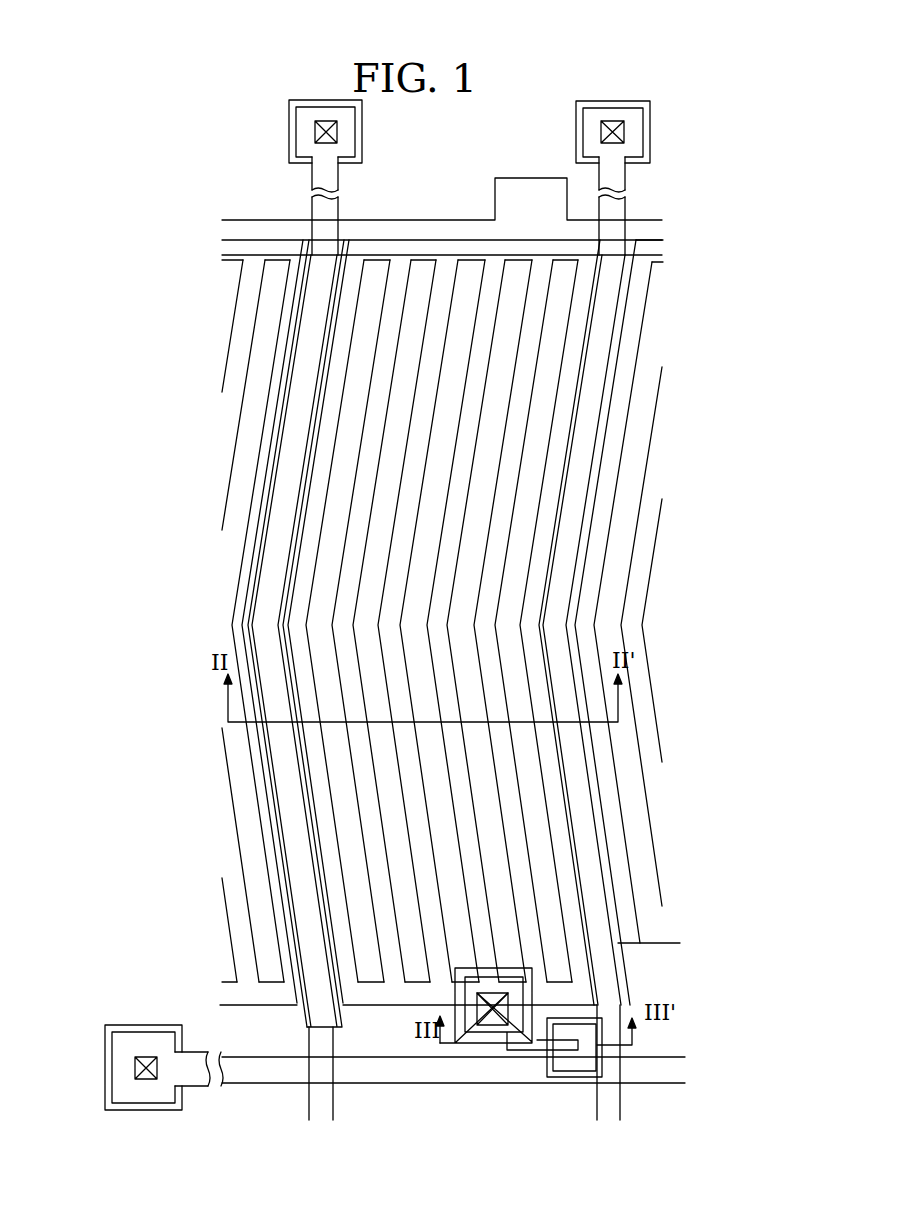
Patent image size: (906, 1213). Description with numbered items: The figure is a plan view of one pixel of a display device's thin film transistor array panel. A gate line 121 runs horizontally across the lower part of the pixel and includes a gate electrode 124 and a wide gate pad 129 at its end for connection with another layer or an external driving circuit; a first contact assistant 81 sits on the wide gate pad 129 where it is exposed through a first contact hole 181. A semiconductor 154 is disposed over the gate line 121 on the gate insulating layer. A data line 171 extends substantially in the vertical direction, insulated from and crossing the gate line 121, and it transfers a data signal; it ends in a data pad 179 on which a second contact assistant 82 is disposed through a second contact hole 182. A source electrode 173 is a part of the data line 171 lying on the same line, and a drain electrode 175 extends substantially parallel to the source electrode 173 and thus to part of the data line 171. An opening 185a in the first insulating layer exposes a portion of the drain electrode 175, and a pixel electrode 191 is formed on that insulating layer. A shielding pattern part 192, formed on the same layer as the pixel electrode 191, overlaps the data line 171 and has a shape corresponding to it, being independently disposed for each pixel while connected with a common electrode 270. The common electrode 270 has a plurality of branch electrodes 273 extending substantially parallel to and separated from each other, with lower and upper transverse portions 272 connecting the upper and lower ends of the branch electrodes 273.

The second contact assistant 82 is at (362, 110).
The second contact hole 182 is at (337, 131).
The data pad 179 is at (296, 132).
The transverse portions 272 is at (413, 250).
The branch electrodes 273 is at (540, 352).
The common electrode 270 is at (464, 649).
The data line 171 is at (627, 244).
The first contact assistant 81 is at (140, 1025).
The wide gate pad 129 is at (112, 1064).
The first contact hole 181 is at (150, 1082).
The gate line 121 is at (283, 1060).
The shielding pattern part 192 is at (334, 1088).
The pixel electrode 191 is at (462, 1044).
The opening 185a is at (492, 1012).
The drain electrode 175 is at (571, 1075).
The source electrode 173 is at (592, 1086).
The semiconductor 154 is at (556, 1072).
The gate electrode 124 is at (603, 1050).